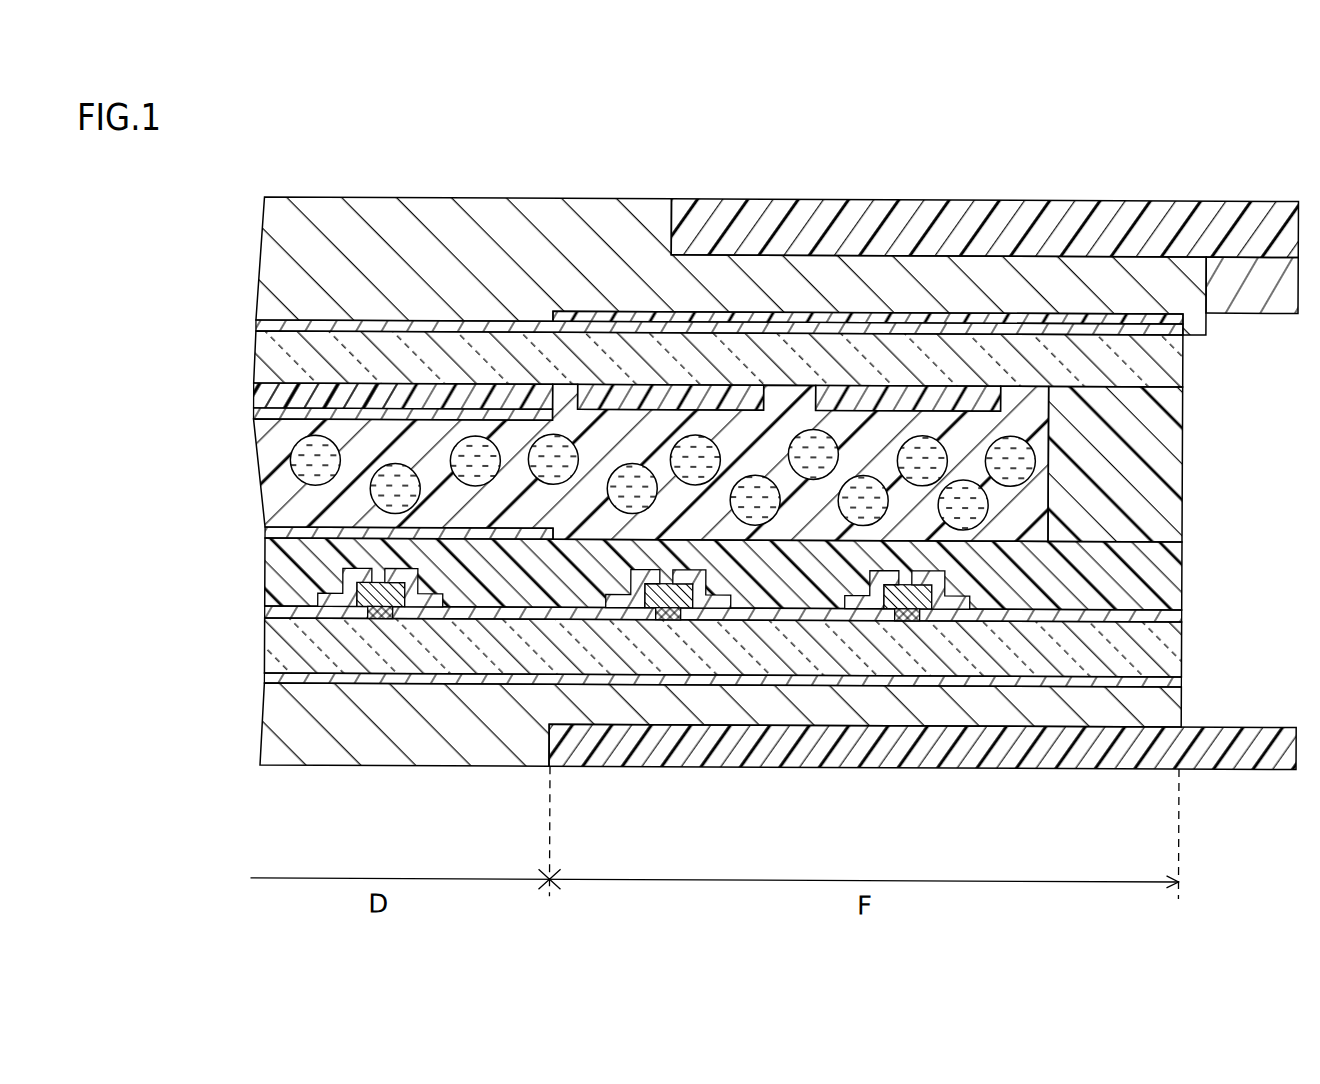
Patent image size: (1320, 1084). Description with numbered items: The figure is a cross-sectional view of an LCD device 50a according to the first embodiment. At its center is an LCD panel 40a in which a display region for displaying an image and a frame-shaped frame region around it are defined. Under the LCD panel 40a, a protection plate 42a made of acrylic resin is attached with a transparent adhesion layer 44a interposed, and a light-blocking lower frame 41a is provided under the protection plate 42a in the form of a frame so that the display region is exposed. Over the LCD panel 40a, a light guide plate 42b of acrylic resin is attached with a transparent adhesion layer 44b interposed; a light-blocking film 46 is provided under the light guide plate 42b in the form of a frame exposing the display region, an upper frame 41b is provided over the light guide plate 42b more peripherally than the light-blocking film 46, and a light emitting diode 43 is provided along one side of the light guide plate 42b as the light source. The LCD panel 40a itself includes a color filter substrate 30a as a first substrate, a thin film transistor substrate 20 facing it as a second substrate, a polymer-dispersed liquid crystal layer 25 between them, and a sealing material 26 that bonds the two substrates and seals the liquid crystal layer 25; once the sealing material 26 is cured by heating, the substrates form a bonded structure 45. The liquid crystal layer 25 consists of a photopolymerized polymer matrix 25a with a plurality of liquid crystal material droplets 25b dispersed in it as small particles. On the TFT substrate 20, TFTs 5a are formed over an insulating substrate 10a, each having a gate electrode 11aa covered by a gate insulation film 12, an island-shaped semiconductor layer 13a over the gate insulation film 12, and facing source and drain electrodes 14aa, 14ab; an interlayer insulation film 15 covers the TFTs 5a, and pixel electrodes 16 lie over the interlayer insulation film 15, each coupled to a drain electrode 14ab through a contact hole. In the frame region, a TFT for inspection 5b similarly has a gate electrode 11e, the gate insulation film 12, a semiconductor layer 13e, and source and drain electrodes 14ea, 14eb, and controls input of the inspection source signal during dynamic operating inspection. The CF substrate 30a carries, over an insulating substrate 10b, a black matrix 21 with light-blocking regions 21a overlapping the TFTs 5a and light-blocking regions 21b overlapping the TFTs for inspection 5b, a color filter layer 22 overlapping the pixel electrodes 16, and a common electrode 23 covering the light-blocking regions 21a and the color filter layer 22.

The LCD device 50a is at (698, 492).
The light guide plate 42b is at (268, 257).
The upper frame 41b is at (1103, 210).
The light emitting diode (LED) 43 is at (1243, 270).
The light-blocking film 46 is at (1018, 318).
The transparent adhesion layer 44b is at (262, 322).
The bonded structure 45 is at (693, 492).
The LCD panel 40a is at (668, 492).
The color filter (CF) substrate 30a is at (712, 265).
The insulating substrate 10b is at (1183, 357).
The black matrix 21 is at (628, 258).
The light-blocking region 21a is at (438, 390).
The light-blocking region 21b is at (857, 385).
The color filter layer 22 is at (272, 395).
The common electrode 23 is at (347, 395).
The polymer-dispersed liquid crystal layer 25 is at (600, 462).
The polymer matrix 25a is at (283, 493).
The liquid crystal material droplets 25b is at (292, 461).
The sealing material 26 is at (1135, 464).
The thin film transistor (TFT) substrate 20 is at (720, 704).
The pixel electrode 16 is at (507, 535).
The interlayer insulation film 15 is at (1183, 573).
The gate insulation film 12 is at (1183, 613).
The insulating substrate 10a is at (1183, 653).
The TFT 5a is at (389, 722).
The semiconductor layer 13a is at (363, 586).
The source electrode 14aa is at (338, 602).
The drain electrode 14ab is at (423, 598).
The gate electrode 11aa is at (382, 618).
The TFT for inspection 5b is at (782, 724).
The semiconductor layer 13e is at (652, 586).
The source electrode 14ea is at (650, 608).
The drain electrode 14eb is at (705, 598).
The gate electrode 11e is at (669, 618).
The transparent adhesion layer 44a is at (266, 678).
The protection plate 42a is at (266, 722).
The lower frame 41a is at (1243, 770).